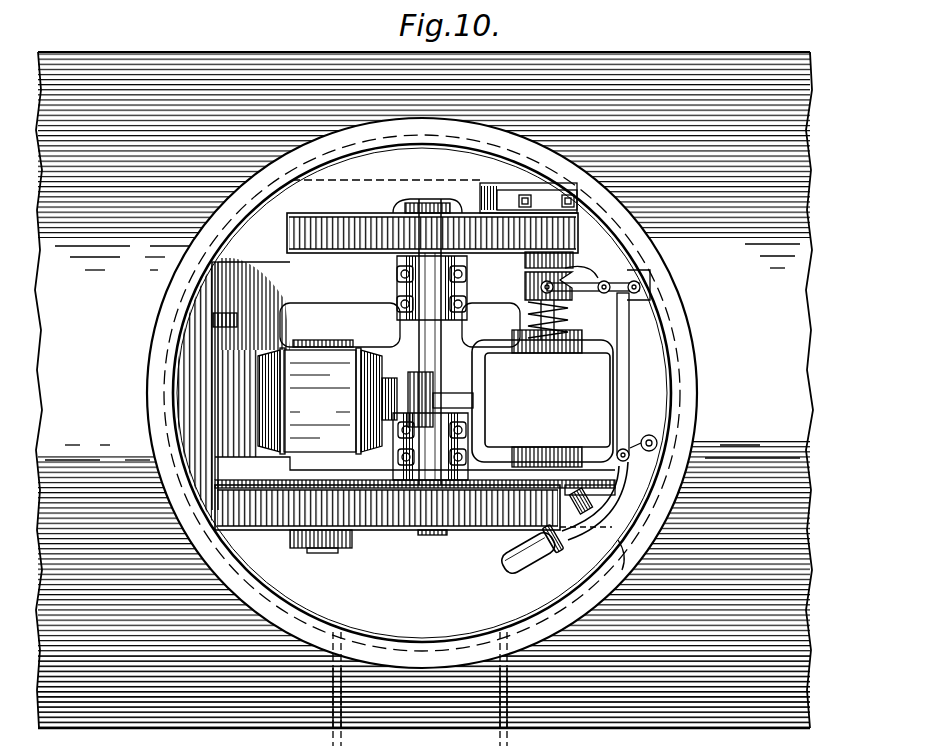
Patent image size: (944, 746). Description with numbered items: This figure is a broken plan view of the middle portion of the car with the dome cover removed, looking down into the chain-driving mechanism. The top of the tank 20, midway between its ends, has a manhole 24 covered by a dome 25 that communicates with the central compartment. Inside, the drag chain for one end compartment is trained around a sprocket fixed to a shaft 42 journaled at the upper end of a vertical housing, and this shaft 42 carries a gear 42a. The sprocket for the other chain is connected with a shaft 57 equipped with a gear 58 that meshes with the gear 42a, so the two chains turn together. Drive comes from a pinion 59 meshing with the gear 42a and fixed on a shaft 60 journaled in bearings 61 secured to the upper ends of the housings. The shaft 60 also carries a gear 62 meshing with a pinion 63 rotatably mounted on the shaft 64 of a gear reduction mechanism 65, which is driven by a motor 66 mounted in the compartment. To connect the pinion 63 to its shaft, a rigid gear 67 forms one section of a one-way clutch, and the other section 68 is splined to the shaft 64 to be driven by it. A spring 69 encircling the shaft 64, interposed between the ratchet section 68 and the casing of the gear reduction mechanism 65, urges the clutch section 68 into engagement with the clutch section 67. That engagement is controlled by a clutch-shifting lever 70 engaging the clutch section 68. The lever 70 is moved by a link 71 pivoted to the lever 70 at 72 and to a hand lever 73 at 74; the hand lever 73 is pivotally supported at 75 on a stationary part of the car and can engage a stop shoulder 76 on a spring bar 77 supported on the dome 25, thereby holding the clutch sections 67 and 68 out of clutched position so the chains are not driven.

The tank 20 is at (178, 55).
The manhole 24 is at (524, 167).
The dome 25 is at (180, 348).
The shaft 42 is at (525, 572).
The gear 42a is at (494, 520).
The shaft 57 is at (333, 549).
The gear 58 is at (363, 521).
The pinion 59 is at (458, 521).
The shaft 60 is at (438, 336).
The bearings 61 is at (423, 277).
The gear 62 is at (362, 224).
The pinion 63 is at (571, 213).
The shaft 64 is at (548, 333).
The gear reduction mechanism 65 is at (542, 401).
The motor 66 is at (365, 401).
The rigid gear 67 is at (576, 235).
The clutch section 68 is at (568, 270).
The spring 69 is at (568, 326).
The clutch-shifting lever 70 is at (598, 263).
The link 71 is at (620, 322).
The pivot 72 is at (641, 286).
The hand lever 73 is at (608, 500).
The pivot 74 is at (629, 460).
The pivotal support 75 is at (658, 443).
The stop shoulder 76 is at (602, 531).
The spring bar 77 is at (626, 556).